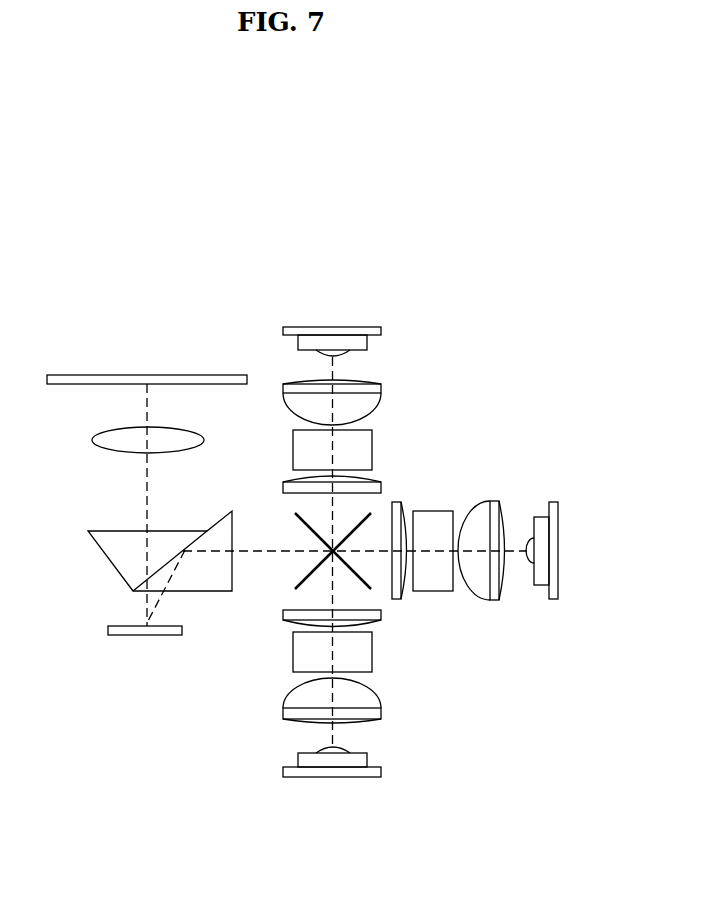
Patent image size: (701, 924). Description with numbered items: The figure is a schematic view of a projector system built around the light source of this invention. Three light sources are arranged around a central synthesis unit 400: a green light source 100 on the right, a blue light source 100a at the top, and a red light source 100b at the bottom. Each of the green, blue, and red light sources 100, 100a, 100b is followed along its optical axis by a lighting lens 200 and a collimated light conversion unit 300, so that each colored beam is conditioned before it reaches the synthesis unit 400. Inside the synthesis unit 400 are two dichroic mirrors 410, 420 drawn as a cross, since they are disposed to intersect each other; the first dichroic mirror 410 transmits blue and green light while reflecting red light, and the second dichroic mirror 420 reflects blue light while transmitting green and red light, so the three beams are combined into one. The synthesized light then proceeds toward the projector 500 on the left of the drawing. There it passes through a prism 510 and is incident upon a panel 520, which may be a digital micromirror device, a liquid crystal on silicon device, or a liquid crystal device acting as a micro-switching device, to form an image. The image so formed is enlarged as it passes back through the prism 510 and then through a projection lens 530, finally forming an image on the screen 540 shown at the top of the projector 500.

The green light source 100 is at (547, 613).
The blue light source 100a is at (397, 332).
The red light source 100b is at (398, 765).
The lighting lens 200 is at (380, 389).
The collimated light conversion unit 300 is at (367, 437).
The synthesis unit 400 is at (318, 550).
The first dichroic mirror 410 is at (296, 521).
The second dichroic mirror 420 is at (377, 519).
The projector 500 is at (139, 520).
The prism 510 is at (108, 562).
The panel 520 is at (110, 630).
The projection lens 530 is at (98, 443).
The screen 540 is at (65, 375).